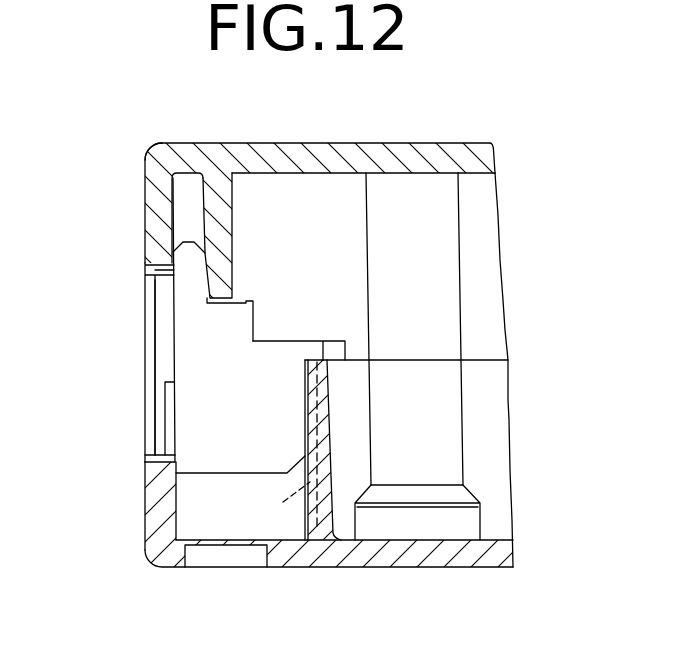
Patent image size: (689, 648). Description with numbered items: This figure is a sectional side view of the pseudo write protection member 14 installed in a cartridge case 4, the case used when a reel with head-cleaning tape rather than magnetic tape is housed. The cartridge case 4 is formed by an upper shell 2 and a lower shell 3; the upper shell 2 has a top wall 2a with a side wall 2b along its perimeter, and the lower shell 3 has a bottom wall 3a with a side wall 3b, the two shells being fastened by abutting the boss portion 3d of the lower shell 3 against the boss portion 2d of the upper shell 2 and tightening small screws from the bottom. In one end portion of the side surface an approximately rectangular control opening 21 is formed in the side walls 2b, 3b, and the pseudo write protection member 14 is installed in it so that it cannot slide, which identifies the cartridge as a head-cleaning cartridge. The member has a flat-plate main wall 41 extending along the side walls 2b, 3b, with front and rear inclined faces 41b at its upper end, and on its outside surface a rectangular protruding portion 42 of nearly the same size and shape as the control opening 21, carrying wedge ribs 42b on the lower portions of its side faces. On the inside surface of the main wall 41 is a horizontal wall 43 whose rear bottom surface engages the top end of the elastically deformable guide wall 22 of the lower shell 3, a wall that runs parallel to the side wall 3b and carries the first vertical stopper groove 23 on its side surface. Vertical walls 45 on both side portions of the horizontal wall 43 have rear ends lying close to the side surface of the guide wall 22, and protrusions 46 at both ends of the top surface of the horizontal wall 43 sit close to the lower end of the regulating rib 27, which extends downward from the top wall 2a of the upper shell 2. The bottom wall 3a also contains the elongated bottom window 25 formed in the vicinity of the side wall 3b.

The upper shell 2 is at (488, 248).
The top wall 2a is at (329, 149).
The side wall 2b is at (150, 190).
The boss portion 2d is at (447, 317).
The lower shell 3 is at (503, 490).
The bottom wall 3a is at (435, 566).
The side wall 3b is at (153, 508).
The boss portion 3d is at (453, 422).
The cartridge case 4 is at (162, 146).
The pseudo write protection member 14 is at (155, 318).
The control opening 21 is at (148, 445).
The guide wall 22 is at (325, 388).
The first vertical stopper groove 23 is at (278, 506).
The bottom window 25 is at (241, 566).
The regulating rib 27 is at (228, 201).
The main wall 41 is at (183, 282).
The inclined face 41b is at (200, 250).
The protruding portion 42 is at (168, 360).
The wedge rib 42b is at (172, 415).
The horizontal wall 43 is at (302, 342).
The vertical wall 45 is at (238, 465).
The protrusion 46 is at (245, 303).